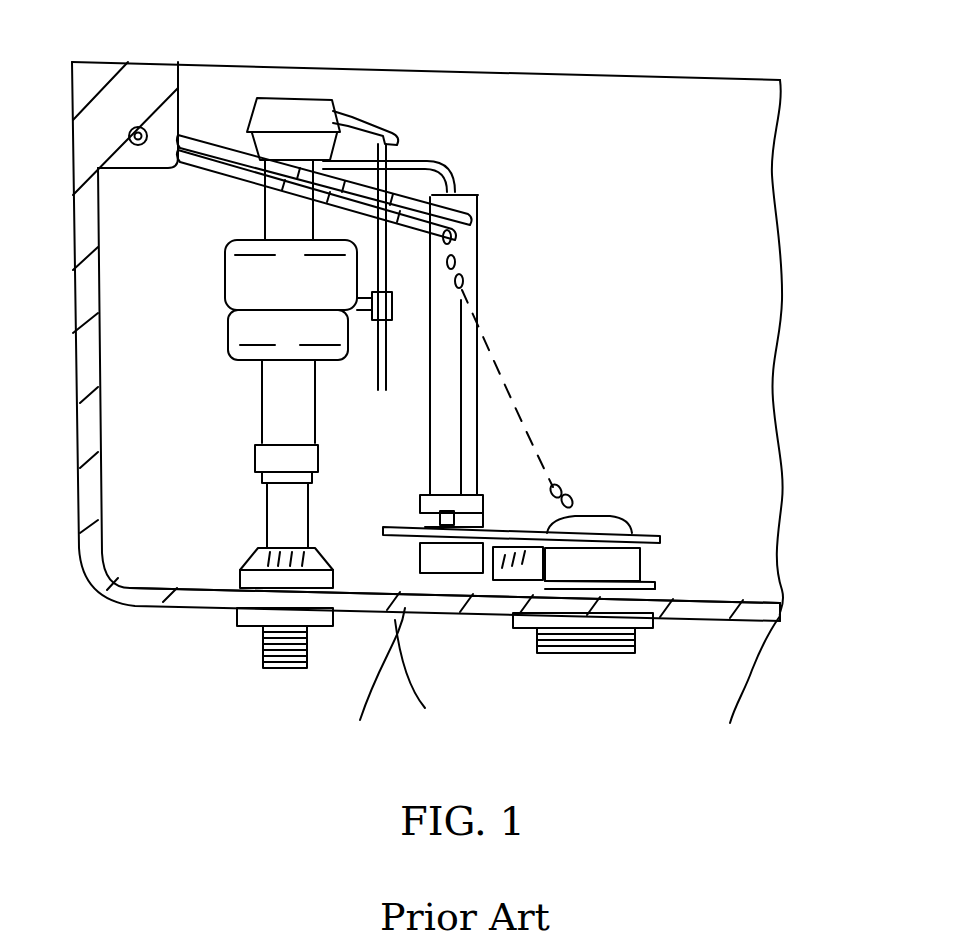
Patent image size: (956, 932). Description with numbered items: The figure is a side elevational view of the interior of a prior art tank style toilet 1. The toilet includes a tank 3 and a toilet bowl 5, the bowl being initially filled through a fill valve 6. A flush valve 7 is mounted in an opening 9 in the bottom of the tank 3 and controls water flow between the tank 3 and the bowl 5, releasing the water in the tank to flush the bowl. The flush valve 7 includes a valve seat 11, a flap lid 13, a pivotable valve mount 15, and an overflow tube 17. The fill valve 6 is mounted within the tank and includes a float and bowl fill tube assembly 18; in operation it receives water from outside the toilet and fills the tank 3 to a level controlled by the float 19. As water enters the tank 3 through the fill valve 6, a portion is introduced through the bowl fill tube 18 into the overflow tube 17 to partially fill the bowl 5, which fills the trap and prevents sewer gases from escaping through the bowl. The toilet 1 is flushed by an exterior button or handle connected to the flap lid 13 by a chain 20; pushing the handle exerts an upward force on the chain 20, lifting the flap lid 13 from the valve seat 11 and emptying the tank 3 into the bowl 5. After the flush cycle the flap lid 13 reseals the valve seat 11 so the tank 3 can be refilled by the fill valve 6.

The toilet 1 is at (62, 550).
The tank 3 is at (706, 110).
The toilet bowl 5 is at (728, 677).
The fill valve 6 is at (212, 186).
The flush valve 7 is at (625, 511).
The opening 9 is at (673, 592).
The valve seat 11 is at (648, 566).
The flap lid 13 is at (610, 517).
The pivotable valve mount 15 is at (427, 553).
The overflow tube 17 is at (470, 400).
The float and bowl fill tube assembly 18 is at (230, 442).
The float 19 is at (243, 287).
The chain 20 is at (522, 423).